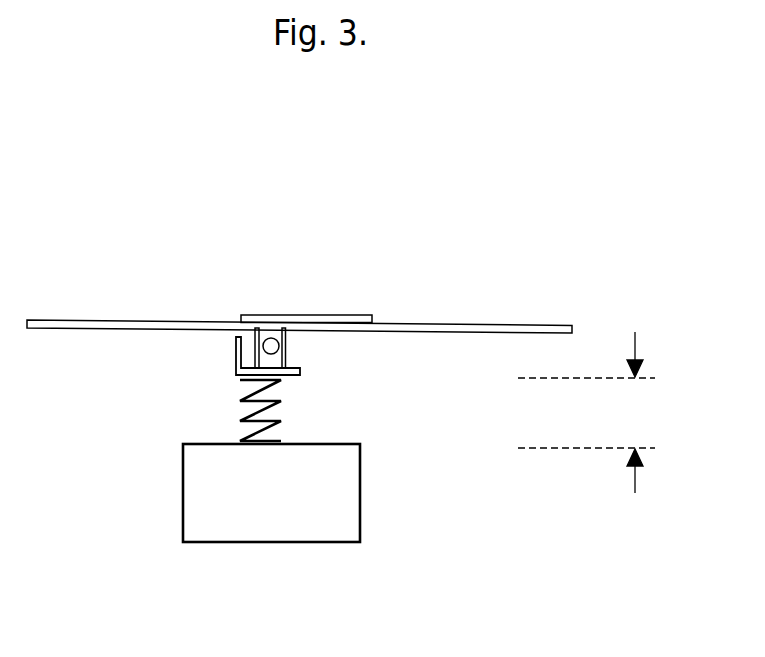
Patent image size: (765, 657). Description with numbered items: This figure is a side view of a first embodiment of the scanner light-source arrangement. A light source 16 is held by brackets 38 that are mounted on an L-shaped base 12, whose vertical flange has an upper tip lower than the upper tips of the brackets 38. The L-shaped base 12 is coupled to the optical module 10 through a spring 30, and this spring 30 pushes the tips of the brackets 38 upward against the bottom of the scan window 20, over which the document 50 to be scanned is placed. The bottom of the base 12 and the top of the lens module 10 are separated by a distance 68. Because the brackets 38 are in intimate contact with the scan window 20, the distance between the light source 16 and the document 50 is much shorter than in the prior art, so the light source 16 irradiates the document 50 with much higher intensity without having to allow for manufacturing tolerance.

The optical module 10 is at (300, 515).
The L-shaped base 12 is at (236, 369).
The light source 16 is at (236, 347).
The scan window 20 is at (531, 325).
The spring 30 is at (287, 414).
The brackets 38 is at (259, 347).
The document 50 is at (325, 315).
The distance 68 is at (586, 412).